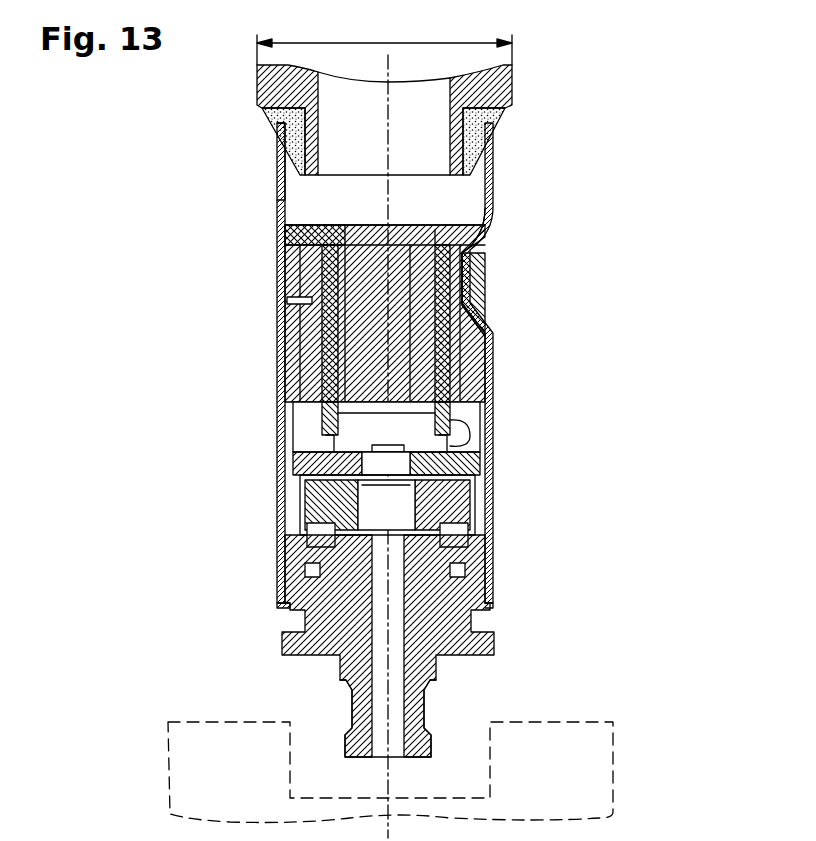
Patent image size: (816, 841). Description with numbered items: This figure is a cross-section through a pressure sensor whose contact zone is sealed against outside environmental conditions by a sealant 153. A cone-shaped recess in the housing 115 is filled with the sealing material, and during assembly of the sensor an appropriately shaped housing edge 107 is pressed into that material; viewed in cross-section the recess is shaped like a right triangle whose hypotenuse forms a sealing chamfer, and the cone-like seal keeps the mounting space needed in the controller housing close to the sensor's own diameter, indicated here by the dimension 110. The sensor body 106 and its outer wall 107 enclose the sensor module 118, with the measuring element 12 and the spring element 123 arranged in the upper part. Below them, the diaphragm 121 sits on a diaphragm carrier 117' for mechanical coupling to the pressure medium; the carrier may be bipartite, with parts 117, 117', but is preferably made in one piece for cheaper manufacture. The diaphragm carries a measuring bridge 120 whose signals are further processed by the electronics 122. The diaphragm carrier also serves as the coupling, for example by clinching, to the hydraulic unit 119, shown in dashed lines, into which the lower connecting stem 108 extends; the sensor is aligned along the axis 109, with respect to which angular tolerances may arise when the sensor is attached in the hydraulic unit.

The outer diameter of cap 110 is at (432, 43).
The housing 115 is at (478, 82).
The sealant 153 is at (490, 112).
The housing 106 is at (274, 128).
The housing edge 107 is at (278, 207).
The sensor element 12 is at (375, 225).
The spring element 123 is at (488, 322).
The sensor module 118 is at (508, 387).
The electronics 122 is at (385, 442).
The measuring bridge 120 is at (430, 463).
The diaphragm 121 is at (380, 488).
The diaphragm carrier 117' is at (453, 511).
The diaphragm carrier part 117 is at (441, 646).
The connecting stem 108 is at (430, 695).
The hydraulic unit 119 is at (590, 738).
The axis 109 is at (388, 777).